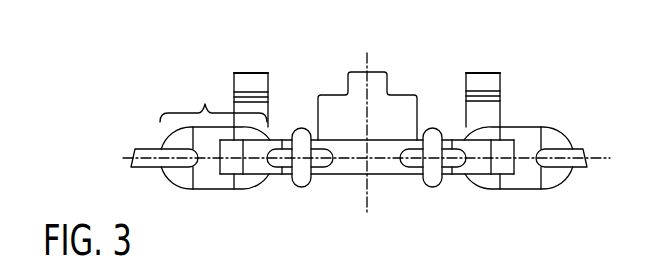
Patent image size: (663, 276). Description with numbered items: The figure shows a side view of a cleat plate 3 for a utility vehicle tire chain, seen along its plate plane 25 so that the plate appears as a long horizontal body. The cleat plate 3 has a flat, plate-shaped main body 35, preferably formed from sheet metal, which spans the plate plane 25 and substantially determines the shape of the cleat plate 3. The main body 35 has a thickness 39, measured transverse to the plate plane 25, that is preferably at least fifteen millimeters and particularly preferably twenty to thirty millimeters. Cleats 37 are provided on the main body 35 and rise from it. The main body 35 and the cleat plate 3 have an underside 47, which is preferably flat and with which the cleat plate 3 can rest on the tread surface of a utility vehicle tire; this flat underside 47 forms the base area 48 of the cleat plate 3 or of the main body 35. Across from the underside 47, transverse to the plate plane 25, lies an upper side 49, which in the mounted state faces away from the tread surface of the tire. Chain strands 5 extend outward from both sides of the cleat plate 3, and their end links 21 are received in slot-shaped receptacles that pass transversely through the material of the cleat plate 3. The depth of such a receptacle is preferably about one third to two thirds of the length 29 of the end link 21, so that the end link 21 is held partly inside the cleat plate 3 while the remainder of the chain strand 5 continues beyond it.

The cleat plate 3 is at (404, 50).
The chain strand 5 is at (173, 192).
The end link 21 is at (213, 185).
The plate plane 25 is at (380, 168).
The length of end link 29 is at (213, 99).
The main body 35 is at (339, 168).
The cleat 37 is at (253, 82).
The thickness of main body 39 is at (279, 217).
The underside 47 is at (411, 180).
The base area 48 is at (460, 180).
The upper side 49 is at (452, 133).